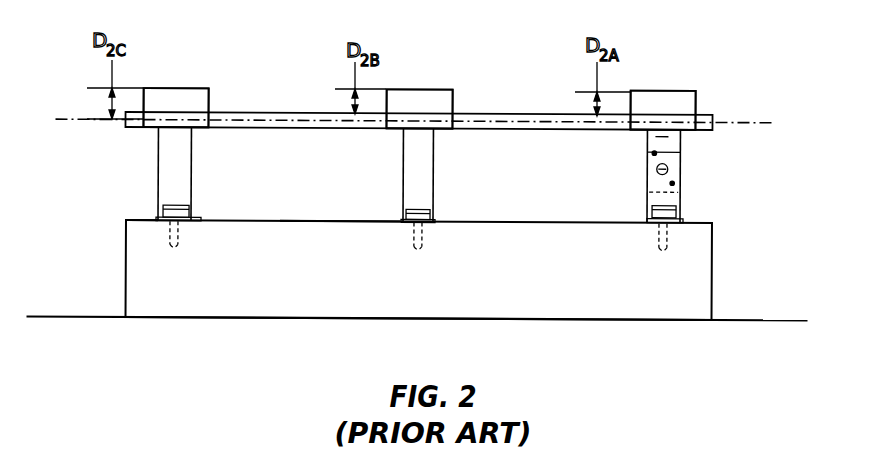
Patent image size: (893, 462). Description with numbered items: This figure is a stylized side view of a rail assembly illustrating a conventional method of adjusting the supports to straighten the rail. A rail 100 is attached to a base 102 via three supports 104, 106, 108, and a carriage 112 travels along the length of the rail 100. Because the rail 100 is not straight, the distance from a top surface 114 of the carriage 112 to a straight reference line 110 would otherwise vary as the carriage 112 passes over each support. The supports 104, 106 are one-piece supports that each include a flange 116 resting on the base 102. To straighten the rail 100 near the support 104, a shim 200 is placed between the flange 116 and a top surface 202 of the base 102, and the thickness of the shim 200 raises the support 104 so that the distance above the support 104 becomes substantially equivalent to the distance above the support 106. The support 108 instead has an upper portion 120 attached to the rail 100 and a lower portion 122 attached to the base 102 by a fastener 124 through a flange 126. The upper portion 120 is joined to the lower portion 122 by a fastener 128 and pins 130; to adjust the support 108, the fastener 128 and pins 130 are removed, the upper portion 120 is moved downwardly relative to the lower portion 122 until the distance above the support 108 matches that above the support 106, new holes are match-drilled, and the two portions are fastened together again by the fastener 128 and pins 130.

The rail 100 is at (538, 113).
The base 102 is at (700, 270).
The support 104 is at (182, 180).
The support 106 is at (423, 180).
The support 108 is at (680, 178).
The reference line 110 is at (775, 123).
The carriage 112 is at (207, 92).
The top surface 114 is at (158, 88).
The flange 116 is at (196, 212).
The upper portion 120 is at (668, 137).
The lower portion 122 is at (648, 190).
The fastener 124 is at (654, 211).
The flange 126 is at (683, 221).
The fastener 128 is at (647, 172).
The pins 130 is at (648, 152).
The shim 200 is at (157, 219).
The top surface 202 is at (290, 220).